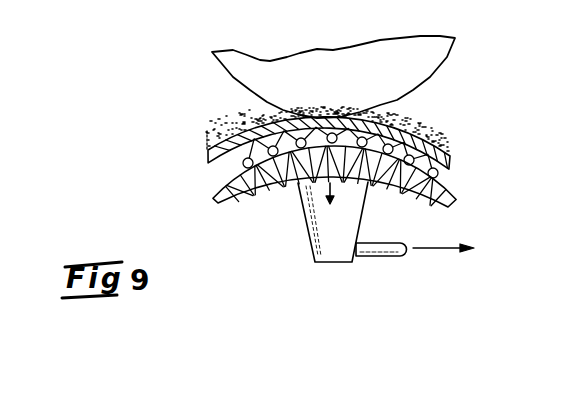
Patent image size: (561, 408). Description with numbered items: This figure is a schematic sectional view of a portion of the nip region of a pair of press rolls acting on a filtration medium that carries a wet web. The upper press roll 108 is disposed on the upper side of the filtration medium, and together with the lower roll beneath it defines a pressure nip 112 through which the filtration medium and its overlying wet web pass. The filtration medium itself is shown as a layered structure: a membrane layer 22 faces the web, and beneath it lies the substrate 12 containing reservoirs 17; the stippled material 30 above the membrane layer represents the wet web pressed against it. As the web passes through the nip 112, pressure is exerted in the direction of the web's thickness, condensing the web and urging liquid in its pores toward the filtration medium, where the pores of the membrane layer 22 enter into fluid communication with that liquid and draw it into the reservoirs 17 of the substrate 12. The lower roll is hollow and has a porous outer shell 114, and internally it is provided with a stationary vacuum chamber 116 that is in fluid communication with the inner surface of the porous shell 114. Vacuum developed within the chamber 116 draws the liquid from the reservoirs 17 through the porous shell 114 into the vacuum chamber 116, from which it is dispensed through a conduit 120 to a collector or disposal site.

The press roll 108 is at (358, 65).
The cement layer 30 is at (257, 128).
The membrane layer 22 is at (294, 143).
The reservoirs 17 is at (414, 144).
The pressure nip 112 is at (233, 173).
The substrate 12 is at (360, 189).
The porous outer shell 114 is at (398, 177).
The stationary vacuum chamber 116 is at (300, 224).
The conduit 120 is at (378, 258).